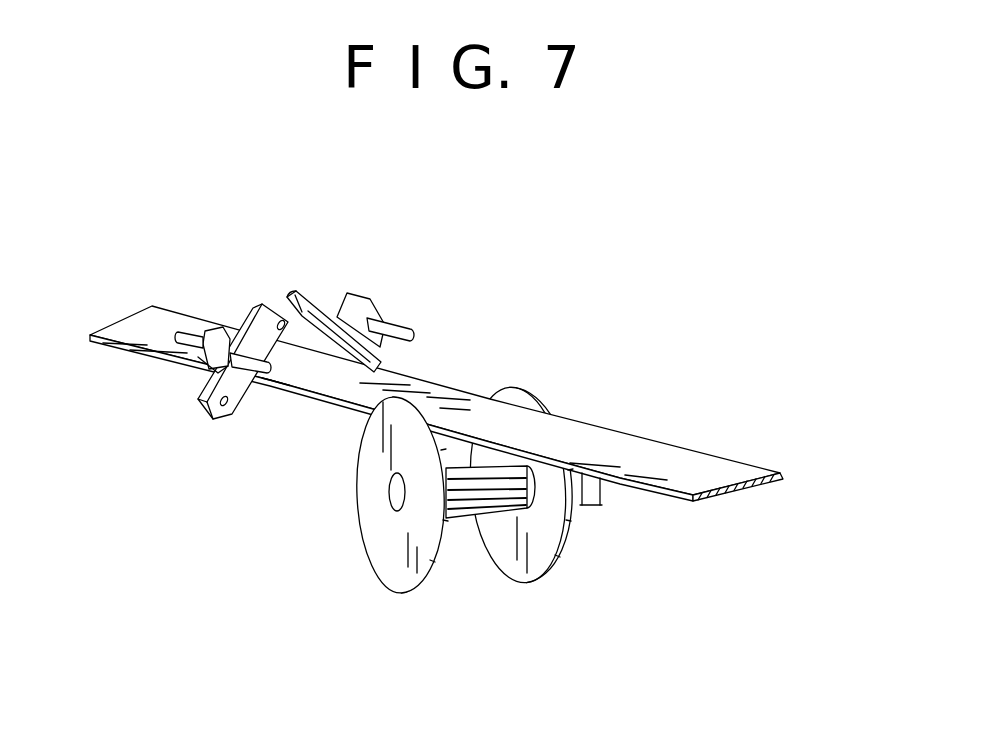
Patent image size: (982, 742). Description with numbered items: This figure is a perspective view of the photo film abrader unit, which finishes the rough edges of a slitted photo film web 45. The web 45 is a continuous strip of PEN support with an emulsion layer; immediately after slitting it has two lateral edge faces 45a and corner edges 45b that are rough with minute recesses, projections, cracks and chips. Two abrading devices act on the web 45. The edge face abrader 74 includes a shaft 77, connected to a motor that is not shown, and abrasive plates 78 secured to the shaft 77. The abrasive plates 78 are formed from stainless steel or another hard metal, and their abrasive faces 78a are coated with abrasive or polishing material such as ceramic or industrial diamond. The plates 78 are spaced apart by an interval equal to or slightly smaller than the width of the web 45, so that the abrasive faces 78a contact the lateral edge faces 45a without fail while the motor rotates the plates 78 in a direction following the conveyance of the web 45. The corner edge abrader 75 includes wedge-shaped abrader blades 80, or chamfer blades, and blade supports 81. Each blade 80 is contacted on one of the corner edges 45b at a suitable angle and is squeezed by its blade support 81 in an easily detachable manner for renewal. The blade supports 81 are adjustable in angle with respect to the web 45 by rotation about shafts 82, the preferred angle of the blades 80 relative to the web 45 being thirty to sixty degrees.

The photo film web 45 is at (663, 425).
The lateral edge faces 45a is at (477, 426).
The corner edges 45b is at (273, 390).
The edge face abrader 74 is at (578, 575).
The corner edge abrader 75 is at (316, 270).
The shaft 77 is at (586, 505).
The abrasive plates 78 is at (578, 543).
The abrasive faces 78a is at (443, 557).
The abrader blades 80 is at (232, 416).
The blade supports 81 is at (213, 332).
The shafts 82 is at (183, 347).